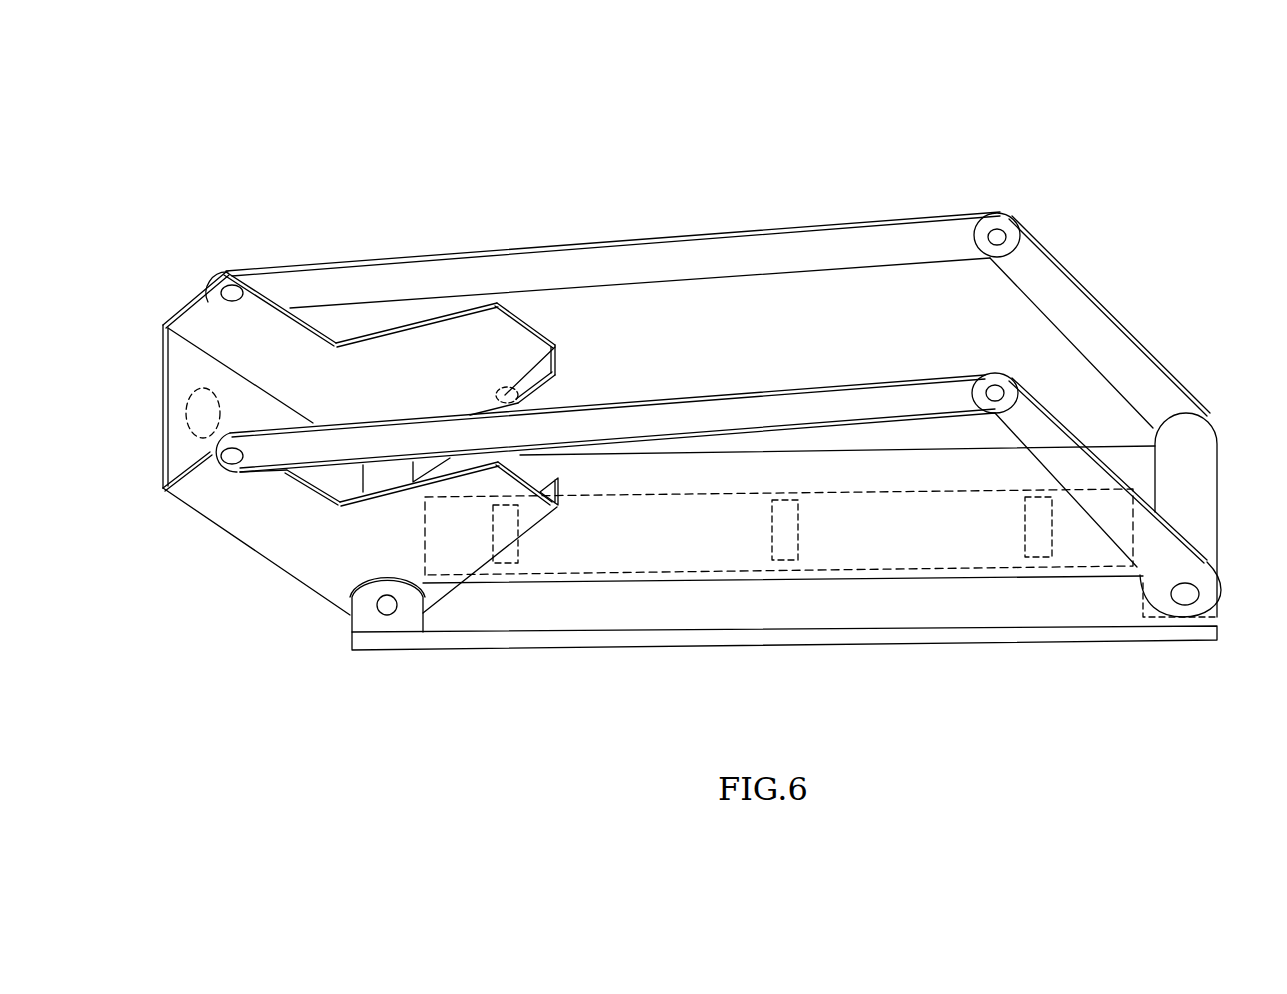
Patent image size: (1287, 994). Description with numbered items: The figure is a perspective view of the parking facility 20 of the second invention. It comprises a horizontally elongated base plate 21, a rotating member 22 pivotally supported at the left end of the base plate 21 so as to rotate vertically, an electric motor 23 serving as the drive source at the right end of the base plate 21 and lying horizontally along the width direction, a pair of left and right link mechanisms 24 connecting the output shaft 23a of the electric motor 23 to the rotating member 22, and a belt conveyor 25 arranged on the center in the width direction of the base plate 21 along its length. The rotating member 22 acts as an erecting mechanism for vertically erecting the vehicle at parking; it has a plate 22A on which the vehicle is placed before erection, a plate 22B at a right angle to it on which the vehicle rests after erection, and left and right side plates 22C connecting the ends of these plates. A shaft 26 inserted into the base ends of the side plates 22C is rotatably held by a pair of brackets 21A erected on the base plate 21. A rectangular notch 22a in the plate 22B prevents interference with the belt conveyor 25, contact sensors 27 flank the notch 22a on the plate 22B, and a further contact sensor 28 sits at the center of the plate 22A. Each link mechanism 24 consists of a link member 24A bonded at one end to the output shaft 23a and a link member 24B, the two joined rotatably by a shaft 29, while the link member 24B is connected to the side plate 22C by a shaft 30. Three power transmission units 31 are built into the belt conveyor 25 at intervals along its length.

The parking facility 20 is at (819, 174).
The base plate 21 is at (655, 628).
The bracket 21A is at (392, 587).
The rotating member 22 is at (241, 544).
The plate 22A is at (176, 382).
The plate 22B is at (539, 368).
The side plate 22C is at (403, 340).
The notch 22a is at (560, 387).
The electric motor 23 is at (1205, 512).
The output shaft 23a is at (1187, 600).
The link mechanism 24 is at (630, 240).
The link member 24A is at (1120, 347).
The link member 24B is at (708, 265).
The belt conveyor 25 is at (915, 512).
The shaft 26 is at (352, 615).
The contact sensor 27 is at (497, 388).
The contact sensor 28 is at (213, 407).
The shaft 29 is at (997, 228).
The shaft 30 is at (223, 277).
The power transmission unit 31 is at (517, 552).